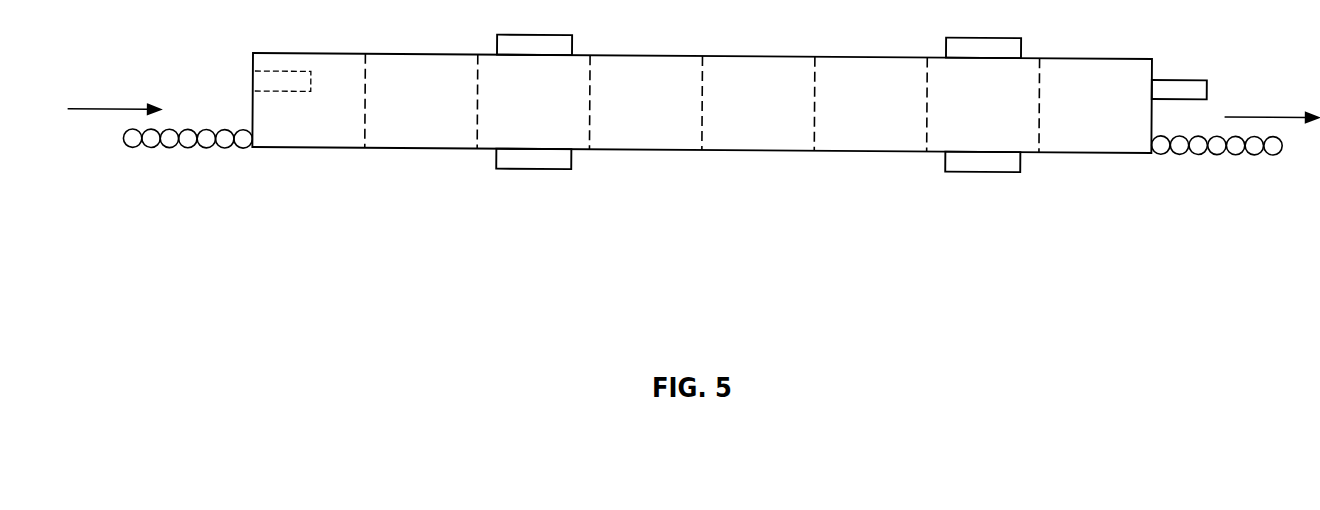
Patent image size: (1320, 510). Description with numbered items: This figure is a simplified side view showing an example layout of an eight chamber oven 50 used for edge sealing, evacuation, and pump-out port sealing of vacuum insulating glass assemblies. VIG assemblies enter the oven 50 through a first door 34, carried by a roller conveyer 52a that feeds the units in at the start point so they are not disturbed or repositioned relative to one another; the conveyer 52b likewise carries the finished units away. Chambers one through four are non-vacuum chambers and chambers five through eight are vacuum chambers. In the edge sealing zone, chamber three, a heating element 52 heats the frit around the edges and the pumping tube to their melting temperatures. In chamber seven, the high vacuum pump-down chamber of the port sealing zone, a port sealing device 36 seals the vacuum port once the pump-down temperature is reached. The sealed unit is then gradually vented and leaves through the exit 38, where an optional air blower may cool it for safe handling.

The eight chamber oven 50 is at (443, 244).
The first door 34 is at (282, 71).
The heating element 52 is at (533, 168).
The port sealing device 36 is at (982, 169).
The exit 38 is at (1180, 73).
The incoming workpieces 52a is at (207, 148).
The outgoing workpieces 52b is at (1217, 150).